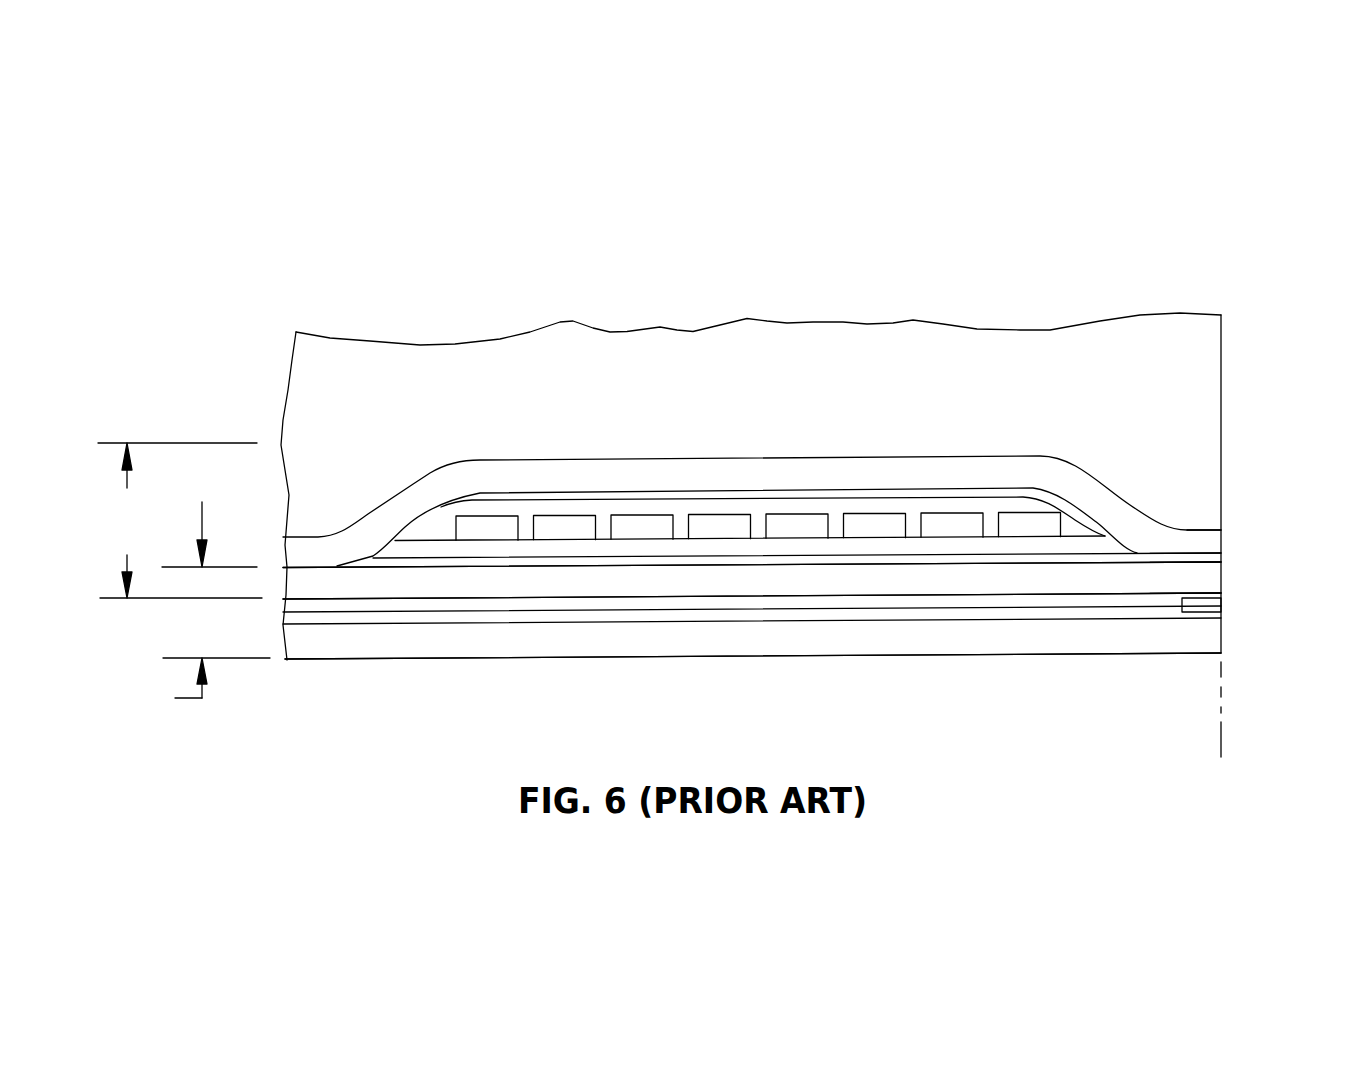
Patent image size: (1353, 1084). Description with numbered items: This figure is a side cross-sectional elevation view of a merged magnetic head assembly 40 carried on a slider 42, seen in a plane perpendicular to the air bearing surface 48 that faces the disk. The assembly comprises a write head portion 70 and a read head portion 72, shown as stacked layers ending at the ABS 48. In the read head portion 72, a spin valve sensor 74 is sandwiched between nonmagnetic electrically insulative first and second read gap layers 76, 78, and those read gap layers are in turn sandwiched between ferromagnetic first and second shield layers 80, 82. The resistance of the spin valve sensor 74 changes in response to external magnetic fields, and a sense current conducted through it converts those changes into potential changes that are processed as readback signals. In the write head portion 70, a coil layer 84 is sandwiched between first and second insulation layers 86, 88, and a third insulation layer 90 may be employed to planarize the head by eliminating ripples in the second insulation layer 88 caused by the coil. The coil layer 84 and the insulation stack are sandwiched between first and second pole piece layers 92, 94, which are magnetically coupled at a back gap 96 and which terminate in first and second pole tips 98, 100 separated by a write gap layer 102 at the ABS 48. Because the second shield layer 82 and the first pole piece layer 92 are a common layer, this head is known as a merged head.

The merged magnetic head assembly 40 is at (240, 346).
The slider 42 is at (1195, 353).
The air bearing surface 48 is at (1222, 687).
The write head portion 70 is at (152, 520).
The read head portion 72 is at (156, 683).
The spin valve sensor 74 is at (1221, 605).
The first read gap layer 76 is at (758, 622).
The second read gap layer 78 is at (691, 597).
The first shield layer 80 is at (935, 637).
The second shield layer 82 is at (752, 635).
The first pole piece layer 92 is at (1015, 580).
The coil layer 84 is at (725, 527).
The first insulation layer 86 is at (577, 550).
The second insulation layer 88 is at (1078, 527).
The third insulation layer 90 is at (487, 497).
The second pole piece layer 94 is at (933, 462).
The back gap 96 is at (313, 568).
The first pole tip 98 is at (1222, 580).
The second pole tip 100 is at (1213, 540).
The write gap layer 102 is at (1215, 558).